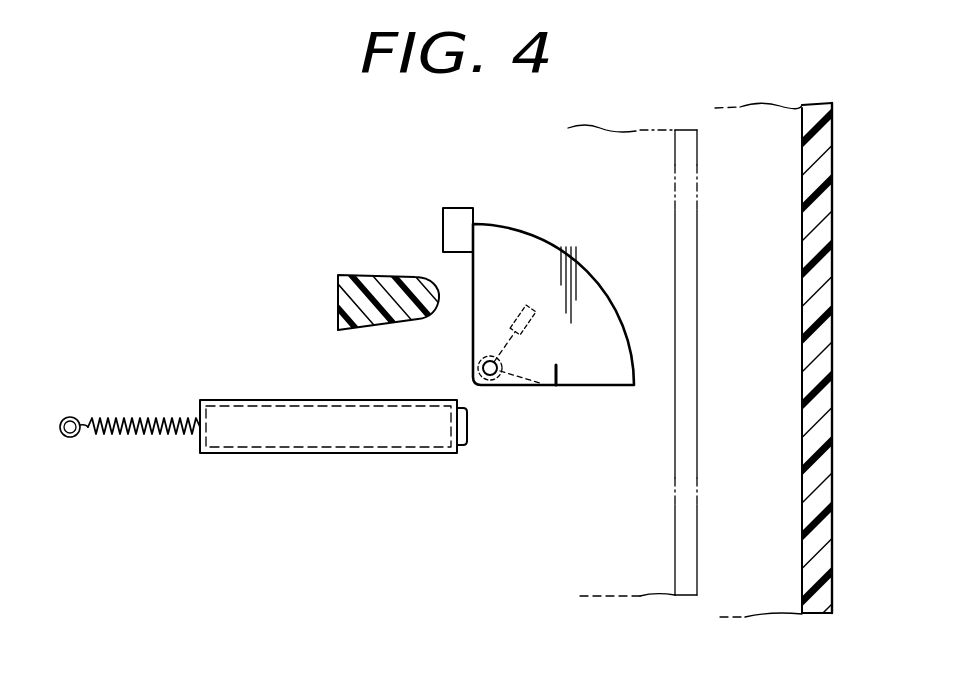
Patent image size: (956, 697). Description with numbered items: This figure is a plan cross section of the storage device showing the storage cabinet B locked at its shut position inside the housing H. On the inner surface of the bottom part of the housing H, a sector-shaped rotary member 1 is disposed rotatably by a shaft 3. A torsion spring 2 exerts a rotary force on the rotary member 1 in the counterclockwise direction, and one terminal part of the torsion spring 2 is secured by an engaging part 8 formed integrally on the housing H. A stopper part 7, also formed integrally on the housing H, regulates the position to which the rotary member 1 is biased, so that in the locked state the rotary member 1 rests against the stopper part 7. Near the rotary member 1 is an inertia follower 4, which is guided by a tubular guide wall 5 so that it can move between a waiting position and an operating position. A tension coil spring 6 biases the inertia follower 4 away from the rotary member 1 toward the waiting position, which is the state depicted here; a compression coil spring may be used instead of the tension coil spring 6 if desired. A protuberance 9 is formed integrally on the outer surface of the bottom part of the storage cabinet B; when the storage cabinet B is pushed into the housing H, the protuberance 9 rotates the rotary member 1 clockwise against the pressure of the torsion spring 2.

The sector-shaped rotary member 1 is at (527, 258).
The torsion spring 2 is at (523, 378).
The shaft 3 is at (483, 368).
The inertia follower 4 is at (465, 432).
The tubular guide wall 5 is at (323, 438).
The tension coil spring 6 is at (147, 435).
The stopper part 7 is at (446, 223).
The engaging part 8 is at (530, 312).
The protuberance 9 is at (360, 272).
The storage cabinet B is at (651, 565).
The housing H is at (782, 575).